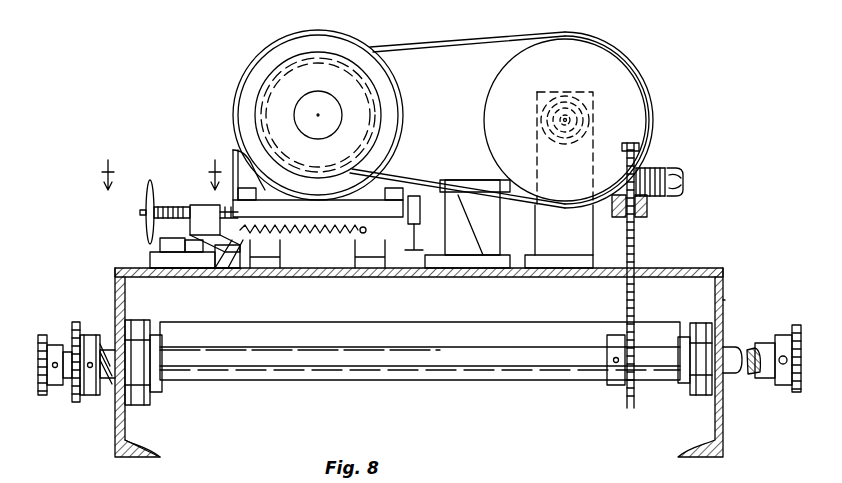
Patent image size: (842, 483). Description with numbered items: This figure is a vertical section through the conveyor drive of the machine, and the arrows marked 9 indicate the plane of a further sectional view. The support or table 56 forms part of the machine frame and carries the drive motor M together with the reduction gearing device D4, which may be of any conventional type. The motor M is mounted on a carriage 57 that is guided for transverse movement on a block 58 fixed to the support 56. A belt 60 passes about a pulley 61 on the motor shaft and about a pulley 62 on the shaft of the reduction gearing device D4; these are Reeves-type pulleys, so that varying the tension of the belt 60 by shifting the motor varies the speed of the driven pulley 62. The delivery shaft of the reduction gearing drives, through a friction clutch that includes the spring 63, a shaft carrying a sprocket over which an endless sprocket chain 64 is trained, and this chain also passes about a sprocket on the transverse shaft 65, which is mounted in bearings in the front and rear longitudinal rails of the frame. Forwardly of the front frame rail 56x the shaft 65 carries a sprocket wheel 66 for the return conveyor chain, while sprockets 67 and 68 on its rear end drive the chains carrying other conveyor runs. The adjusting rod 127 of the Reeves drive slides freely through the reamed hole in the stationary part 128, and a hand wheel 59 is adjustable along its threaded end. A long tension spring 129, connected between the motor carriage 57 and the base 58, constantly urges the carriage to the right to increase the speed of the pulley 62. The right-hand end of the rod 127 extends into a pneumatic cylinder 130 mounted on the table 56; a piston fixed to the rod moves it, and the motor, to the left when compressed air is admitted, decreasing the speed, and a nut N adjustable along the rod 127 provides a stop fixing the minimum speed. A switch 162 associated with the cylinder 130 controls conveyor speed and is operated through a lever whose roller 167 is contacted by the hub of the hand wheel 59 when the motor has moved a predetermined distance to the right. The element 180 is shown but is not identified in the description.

The drive motor M is at (365, 26).
The belt 60 is at (462, 42).
The pulley 61 is at (372, 110).
The driven pulley 62 is at (620, 95).
The spring 63 is at (660, 168).
The endless sprocket chain 64 is at (637, 244).
The transverse shaft 65 is at (575, 368).
The sprocket wheel 66 is at (796, 330).
The sprocket 67 is at (82, 322).
The sprocket 68 is at (50, 335).
The support or table 56 is at (130, 270).
The front frame rail 56x is at (726, 306).
The carriage 57 is at (240, 178).
The block 58 is at (340, 270).
The hand wheel 59 is at (140, 213).
The adjusting rod 127 is at (172, 200).
The stationary part 128 is at (195, 205).
The tension spring 129 is at (305, 240).
The pneumatic cylinder 130 is at (476, 264).
The roller 167 is at (176, 275).
The pillar 180 is at (204, 275).
The switch 162 is at (215, 478).
The nut N is at (405, 255).
The reduction gearing device D4 is at (568, 246).
The section line 9 is at (161, 163).